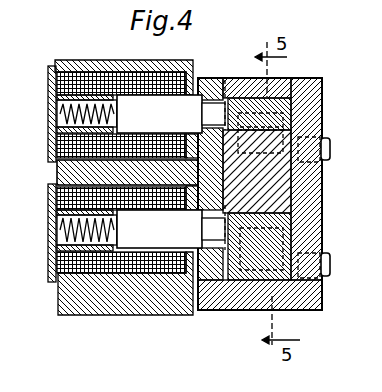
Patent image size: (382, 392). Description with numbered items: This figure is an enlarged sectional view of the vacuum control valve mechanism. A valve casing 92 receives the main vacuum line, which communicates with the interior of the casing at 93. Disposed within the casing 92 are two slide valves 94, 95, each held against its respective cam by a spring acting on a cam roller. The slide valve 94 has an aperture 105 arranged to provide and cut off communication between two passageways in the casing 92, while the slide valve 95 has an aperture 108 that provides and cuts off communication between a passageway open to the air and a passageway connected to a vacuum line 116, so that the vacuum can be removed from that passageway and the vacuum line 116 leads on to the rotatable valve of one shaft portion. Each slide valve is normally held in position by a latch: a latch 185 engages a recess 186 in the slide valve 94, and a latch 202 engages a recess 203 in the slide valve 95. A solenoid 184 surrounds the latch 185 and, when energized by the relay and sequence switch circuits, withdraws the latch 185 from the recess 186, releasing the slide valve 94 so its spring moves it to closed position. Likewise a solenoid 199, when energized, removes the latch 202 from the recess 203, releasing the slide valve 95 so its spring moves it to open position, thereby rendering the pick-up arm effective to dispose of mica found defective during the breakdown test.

The valve casing 92 is at (222, 95).
The solenoid 184 is at (90, 80).
The solenoid 199 is at (95, 266).
The latch 185 is at (212, 100).
The latch 202 is at (220, 258).
The recess 186 is at (227, 96).
The slide valve 94 is at (291, 78).
The recess 203 is at (228, 248).
The slide valve 95 is at (282, 227).
The aperture 108 is at (299, 303).
The aperture 105 is at (290, 116).
The communication point 93 is at (325, 140).
The vacuum line 116 is at (330, 256).